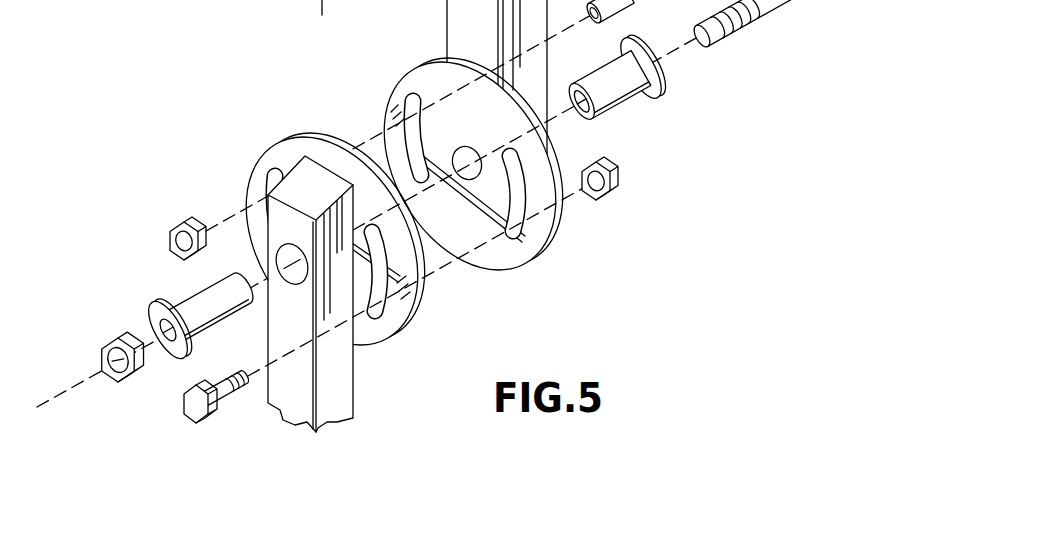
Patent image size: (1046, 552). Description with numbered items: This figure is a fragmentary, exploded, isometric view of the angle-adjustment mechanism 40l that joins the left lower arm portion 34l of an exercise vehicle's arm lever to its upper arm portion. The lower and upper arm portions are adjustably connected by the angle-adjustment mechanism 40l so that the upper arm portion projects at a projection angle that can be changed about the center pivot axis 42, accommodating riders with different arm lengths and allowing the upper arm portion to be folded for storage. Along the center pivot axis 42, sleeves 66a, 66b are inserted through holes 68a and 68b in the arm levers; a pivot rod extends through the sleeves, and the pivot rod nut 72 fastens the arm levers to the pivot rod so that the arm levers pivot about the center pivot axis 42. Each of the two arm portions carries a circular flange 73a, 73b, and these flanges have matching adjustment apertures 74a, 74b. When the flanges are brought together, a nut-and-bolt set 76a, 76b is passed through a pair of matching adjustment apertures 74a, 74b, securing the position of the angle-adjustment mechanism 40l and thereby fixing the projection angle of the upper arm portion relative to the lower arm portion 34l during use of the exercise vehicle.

The center pivot axis 42 is at (67, 390).
The pivot rod nut 72 is at (106, 341).
The sleeve 66a is at (157, 343).
The hole 68a is at (296, 285).
The bolt of nut-and-bolt set 76b is at (184, 408).
The left lower arm portion 34l is at (353, 403).
The adjustment apertures 74a is at (277, 182).
The circular flange 73a is at (414, 320).
The adjustment apertures 74b is at (408, 104).
The circular flange 73b is at (638, 270).
The hole 68b is at (484, 126).
The sleeve 66b is at (739, 125).
The nut of nut-and-bolt set 76a is at (178, 226).
The angle-adjustment mechanism 40l is at (599, 298).